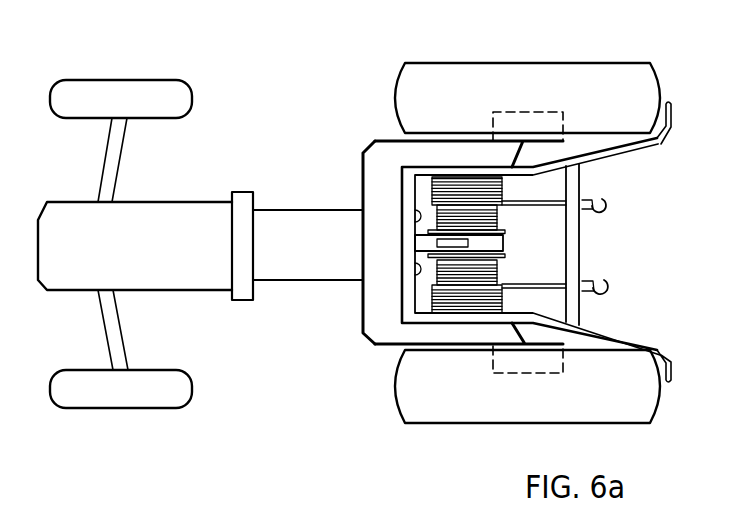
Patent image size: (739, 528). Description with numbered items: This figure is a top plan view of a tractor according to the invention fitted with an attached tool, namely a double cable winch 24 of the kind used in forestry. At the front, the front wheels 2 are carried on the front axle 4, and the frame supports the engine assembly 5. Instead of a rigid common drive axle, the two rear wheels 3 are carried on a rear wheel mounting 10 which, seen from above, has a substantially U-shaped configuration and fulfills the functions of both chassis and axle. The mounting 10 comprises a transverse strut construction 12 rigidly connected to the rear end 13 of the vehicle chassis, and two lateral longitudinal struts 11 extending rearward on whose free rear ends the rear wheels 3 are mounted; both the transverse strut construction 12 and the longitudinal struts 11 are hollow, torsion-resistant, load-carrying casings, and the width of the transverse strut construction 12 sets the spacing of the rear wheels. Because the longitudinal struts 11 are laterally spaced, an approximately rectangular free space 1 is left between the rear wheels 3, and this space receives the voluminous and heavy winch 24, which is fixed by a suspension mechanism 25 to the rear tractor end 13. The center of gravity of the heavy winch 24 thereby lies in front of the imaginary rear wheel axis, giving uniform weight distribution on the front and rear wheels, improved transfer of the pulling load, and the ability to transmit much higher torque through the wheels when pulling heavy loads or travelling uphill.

The free space 1 is at (546, 253).
The front wheels 2 is at (82, 86).
The rear wheels 3 is at (435, 70).
The front axle 4 is at (108, 327).
The engine assembly 5 is at (180, 208).
The rear wheel mounting 10 is at (431, 250).
The longitudinal struts 11 is at (403, 152).
The transverse strut construction 12 is at (370, 317).
The rear end of the vehicle chassis 13 is at (405, 275).
The double cable winch 24 is at (614, 242).
The suspension mechanism 25 is at (410, 183).